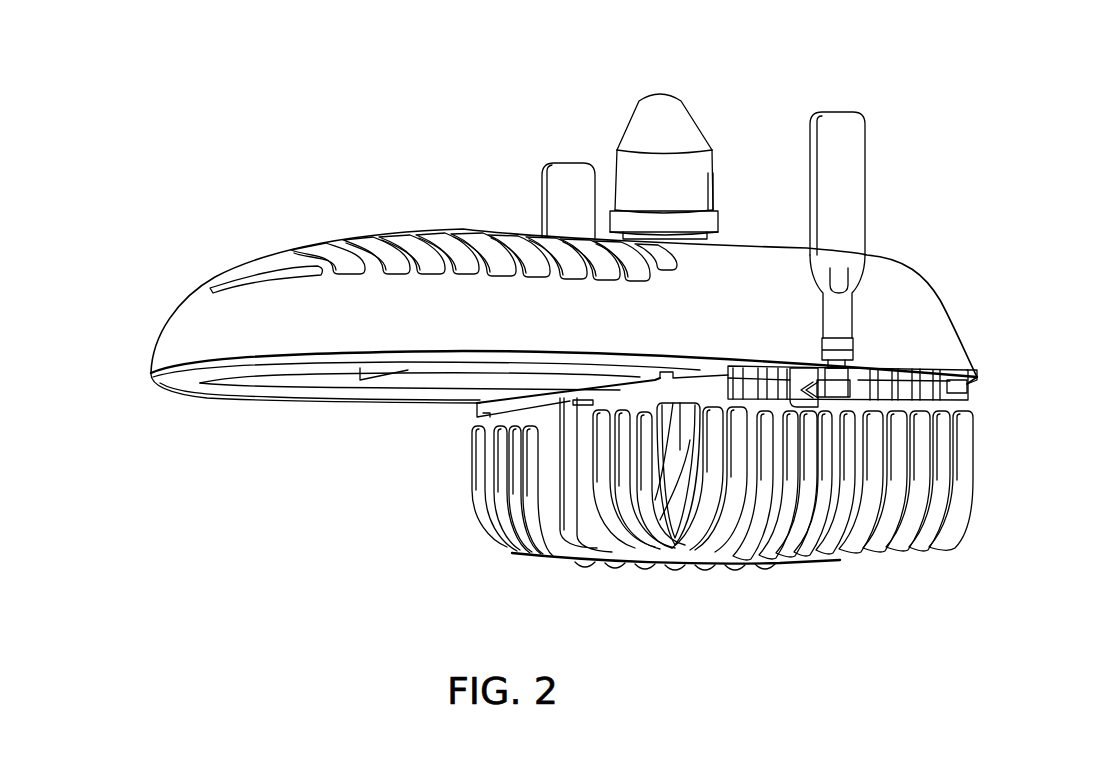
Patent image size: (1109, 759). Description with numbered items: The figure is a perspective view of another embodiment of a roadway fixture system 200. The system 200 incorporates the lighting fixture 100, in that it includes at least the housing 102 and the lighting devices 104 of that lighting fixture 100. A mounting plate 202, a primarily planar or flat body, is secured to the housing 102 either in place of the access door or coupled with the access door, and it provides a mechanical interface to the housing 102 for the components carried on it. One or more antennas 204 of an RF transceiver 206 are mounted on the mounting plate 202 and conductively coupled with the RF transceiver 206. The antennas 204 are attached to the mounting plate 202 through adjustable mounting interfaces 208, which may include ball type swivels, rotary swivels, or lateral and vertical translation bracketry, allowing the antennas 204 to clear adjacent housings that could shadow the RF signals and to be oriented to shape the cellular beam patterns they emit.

The lighting fixture 100 is at (147, 243).
The housing 102 is at (368, 252).
The lighting devices 104 is at (327, 370).
The roadway fixture system 200 is at (871, 76).
The mounting plate 202 is at (477, 405).
The antennas 204 is at (851, 184).
The RF transceiver 206 is at (573, 497).
The adjustable mounting interfaces 208 is at (800, 388).